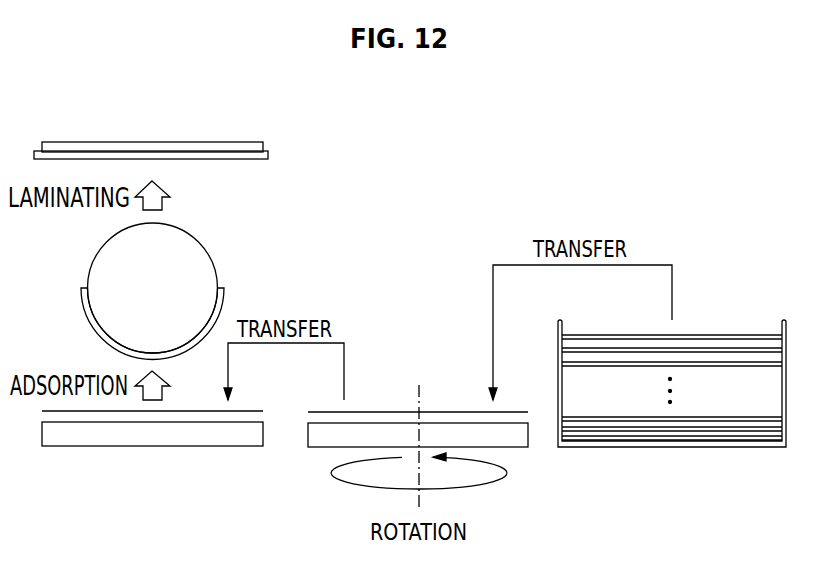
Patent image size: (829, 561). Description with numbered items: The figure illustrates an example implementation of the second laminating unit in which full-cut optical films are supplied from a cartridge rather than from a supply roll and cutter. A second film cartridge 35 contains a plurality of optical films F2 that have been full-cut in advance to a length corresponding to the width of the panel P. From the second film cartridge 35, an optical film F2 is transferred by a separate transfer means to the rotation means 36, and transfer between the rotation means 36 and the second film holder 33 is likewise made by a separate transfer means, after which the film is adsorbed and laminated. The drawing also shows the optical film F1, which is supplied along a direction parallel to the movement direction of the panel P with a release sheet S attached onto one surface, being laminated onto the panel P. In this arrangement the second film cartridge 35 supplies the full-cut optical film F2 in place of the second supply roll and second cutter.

The optical film F1 is at (243, 142).
The panel P is at (269, 155).
The optical film F2 is at (82, 301).
The release sheet S is at (199, 410).
The second film holder 33 is at (236, 447).
The rotation means 36 is at (522, 448).
The second film cartridge 35 is at (725, 272).